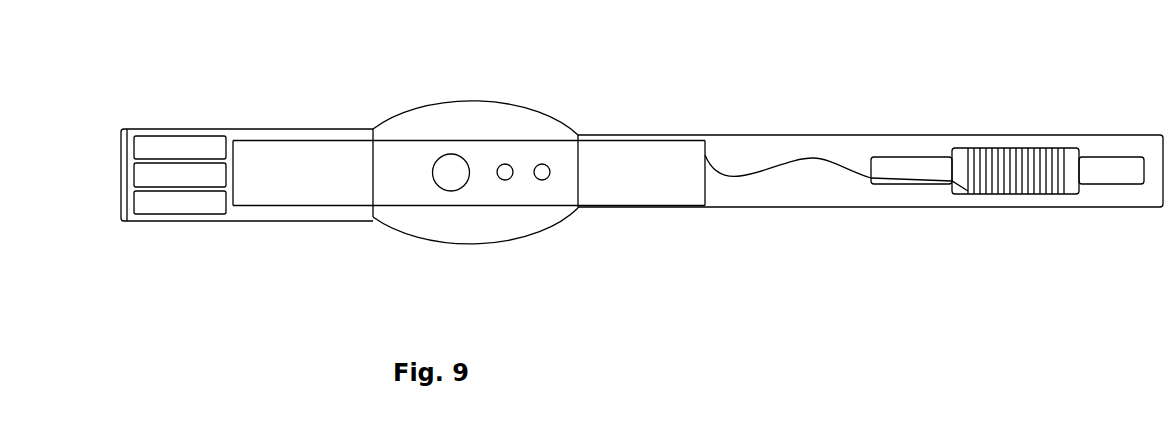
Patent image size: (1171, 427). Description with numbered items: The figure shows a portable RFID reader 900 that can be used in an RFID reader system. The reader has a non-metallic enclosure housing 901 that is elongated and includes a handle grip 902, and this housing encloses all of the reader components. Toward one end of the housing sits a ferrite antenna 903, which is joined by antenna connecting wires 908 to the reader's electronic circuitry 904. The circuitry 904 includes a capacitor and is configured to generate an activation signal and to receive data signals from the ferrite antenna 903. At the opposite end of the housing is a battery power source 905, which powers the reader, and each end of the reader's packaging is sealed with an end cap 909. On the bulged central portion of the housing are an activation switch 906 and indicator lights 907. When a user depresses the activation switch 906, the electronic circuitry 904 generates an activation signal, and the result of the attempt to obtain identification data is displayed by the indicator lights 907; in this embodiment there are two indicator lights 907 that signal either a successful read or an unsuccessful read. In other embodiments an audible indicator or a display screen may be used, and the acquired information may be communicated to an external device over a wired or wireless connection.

The portable RFID reader 900 is at (660, 241).
The non-metallic enclosure housing 901 is at (726, 133).
The handle grip 902 is at (302, 225).
The ferrite antenna 903 is at (1033, 138).
The electronic circuitry 904 is at (613, 157).
The battery power source 905 is at (197, 148).
The activation switch 906 is at (450, 168).
The indicator lights 907 is at (538, 165).
The antenna connecting wires 908 is at (815, 167).
The end cap 909 is at (110, 178).